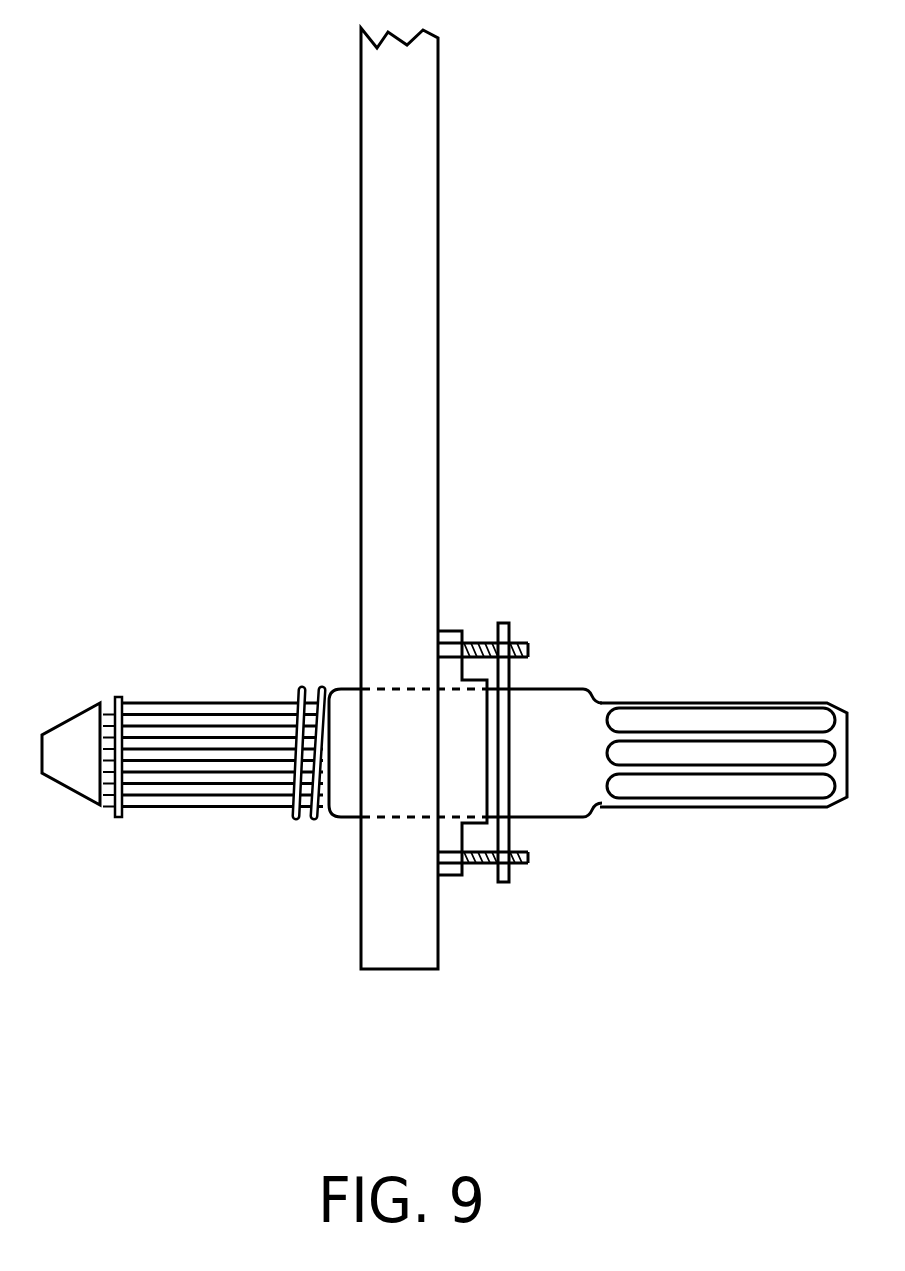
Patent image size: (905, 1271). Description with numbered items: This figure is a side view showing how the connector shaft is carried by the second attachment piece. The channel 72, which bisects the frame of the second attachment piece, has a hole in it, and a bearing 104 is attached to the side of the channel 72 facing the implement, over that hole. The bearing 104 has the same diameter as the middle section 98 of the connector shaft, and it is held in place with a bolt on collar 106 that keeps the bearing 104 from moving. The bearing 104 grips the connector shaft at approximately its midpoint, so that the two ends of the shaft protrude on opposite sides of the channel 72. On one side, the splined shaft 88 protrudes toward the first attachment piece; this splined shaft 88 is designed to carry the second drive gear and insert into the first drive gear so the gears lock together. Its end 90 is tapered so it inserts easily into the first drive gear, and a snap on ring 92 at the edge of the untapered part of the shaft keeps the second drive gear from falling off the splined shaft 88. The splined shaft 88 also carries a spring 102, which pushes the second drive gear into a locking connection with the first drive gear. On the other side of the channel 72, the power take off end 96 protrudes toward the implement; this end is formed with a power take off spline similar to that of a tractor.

The channel 72 is at (444, 457).
The splined shaft 88 is at (234, 696).
The tapered end 90 is at (72, 726).
The snap on ring 92 is at (120, 695).
The power take off end 96 is at (682, 815).
The middle section 98 is at (344, 760).
The spring 102 is at (286, 810).
The bearing 104 is at (453, 780).
The bolt on collar 106 is at (524, 868).